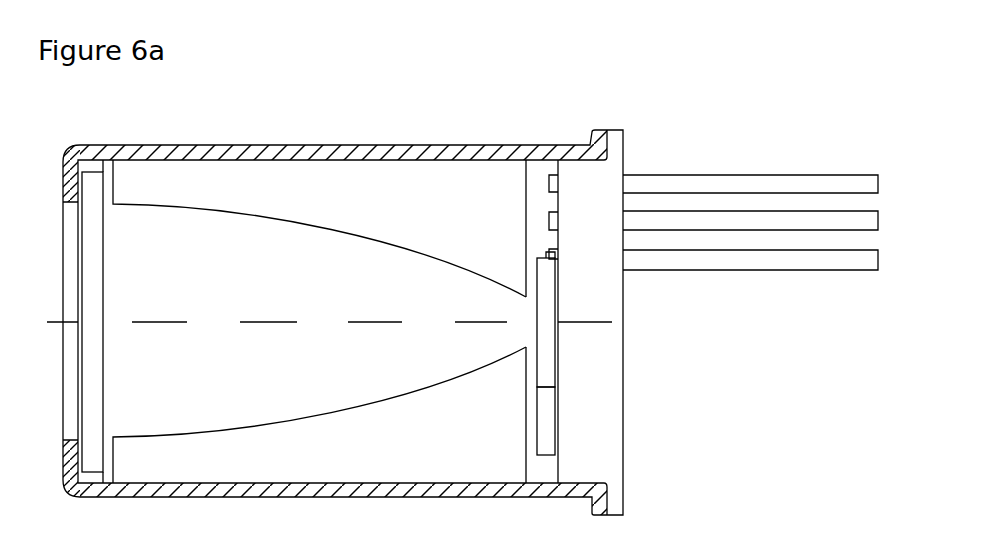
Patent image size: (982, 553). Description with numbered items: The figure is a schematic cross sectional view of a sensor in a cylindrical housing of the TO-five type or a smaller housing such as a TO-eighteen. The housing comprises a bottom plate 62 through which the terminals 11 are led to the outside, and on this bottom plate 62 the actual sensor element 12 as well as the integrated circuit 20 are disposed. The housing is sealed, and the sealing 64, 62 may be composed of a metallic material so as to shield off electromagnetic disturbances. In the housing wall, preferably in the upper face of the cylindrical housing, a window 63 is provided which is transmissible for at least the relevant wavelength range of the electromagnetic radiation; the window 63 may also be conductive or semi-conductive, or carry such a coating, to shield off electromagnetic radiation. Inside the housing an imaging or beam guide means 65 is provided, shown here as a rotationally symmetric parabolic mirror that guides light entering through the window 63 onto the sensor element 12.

The terminals 11 is at (764, 222).
The sensor element 12 is at (564, 319).
The integrated circuit 20 is at (564, 421).
The bottom plate 62 is at (604, 322).
The window 63 is at (111, 321).
The sealing 64 is at (335, 333).
The imaging or beam guide means 65 is at (319, 321).